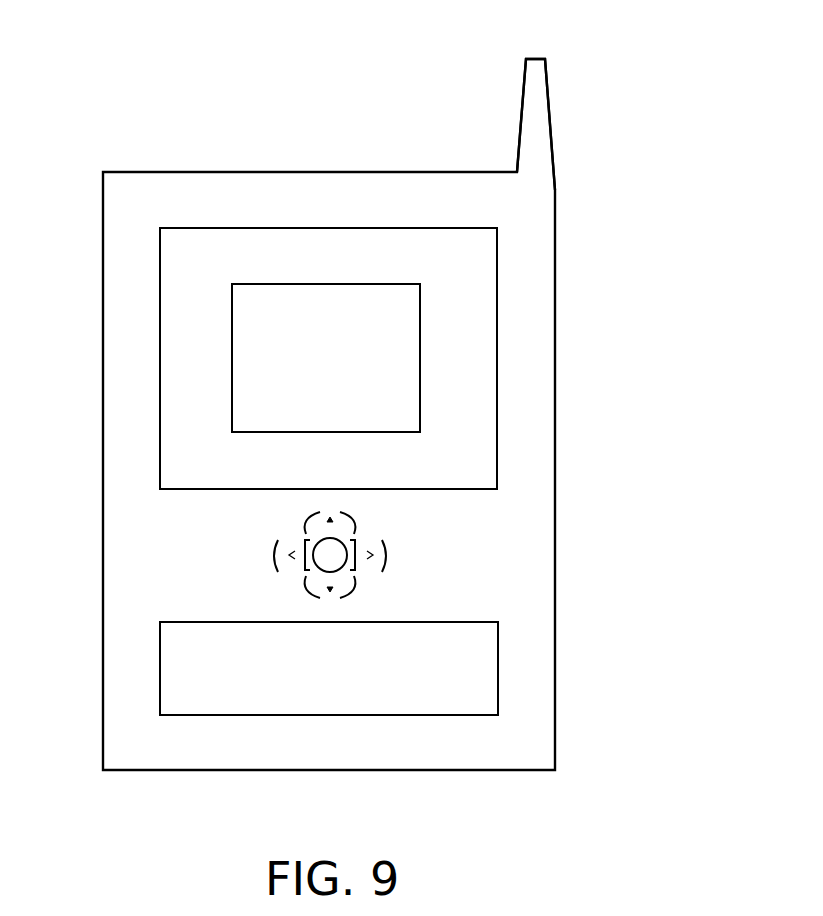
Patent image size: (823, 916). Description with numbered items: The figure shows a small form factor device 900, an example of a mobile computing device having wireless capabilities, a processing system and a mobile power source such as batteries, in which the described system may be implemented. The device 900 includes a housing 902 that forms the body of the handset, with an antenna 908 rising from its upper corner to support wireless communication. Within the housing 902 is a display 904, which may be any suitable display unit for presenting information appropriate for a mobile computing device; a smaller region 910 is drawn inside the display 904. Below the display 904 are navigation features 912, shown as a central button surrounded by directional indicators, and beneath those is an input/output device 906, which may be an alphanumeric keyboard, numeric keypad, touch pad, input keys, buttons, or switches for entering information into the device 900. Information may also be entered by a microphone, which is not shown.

The small form factor device 900 is at (116, 61).
The housing 902 is at (555, 470).
The display 904 is at (498, 247).
The input/output (I/O) device 906 is at (498, 658).
The antenna 908 is at (522, 108).
The display window 910 is at (421, 375).
The navigation features 912 is at (412, 541).